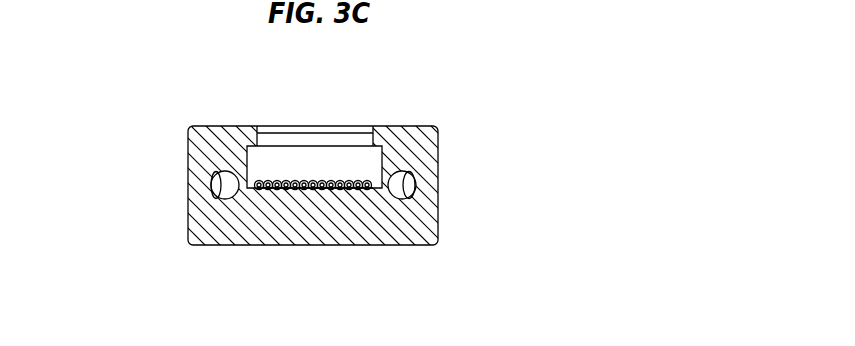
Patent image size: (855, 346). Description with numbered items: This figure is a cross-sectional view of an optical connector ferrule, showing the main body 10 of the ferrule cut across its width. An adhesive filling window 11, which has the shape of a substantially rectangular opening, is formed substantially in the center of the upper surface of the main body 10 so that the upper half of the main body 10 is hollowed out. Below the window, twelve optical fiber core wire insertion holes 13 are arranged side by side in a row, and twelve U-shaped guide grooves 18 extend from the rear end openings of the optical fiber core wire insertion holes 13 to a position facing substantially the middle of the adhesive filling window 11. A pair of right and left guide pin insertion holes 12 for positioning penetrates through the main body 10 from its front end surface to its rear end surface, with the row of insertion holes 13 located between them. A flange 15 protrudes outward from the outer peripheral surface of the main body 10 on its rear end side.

The main body of the ferrule 10 is at (310, 173).
The adhesive filling window 11 is at (258, 133).
The guide pin insertion holes 12 is at (211, 172).
The optical fiber core wire insertion holes 13 is at (358, 189).
The flange 15 is at (440, 196).
The U-shaped guide grooves 18 is at (277, 185).